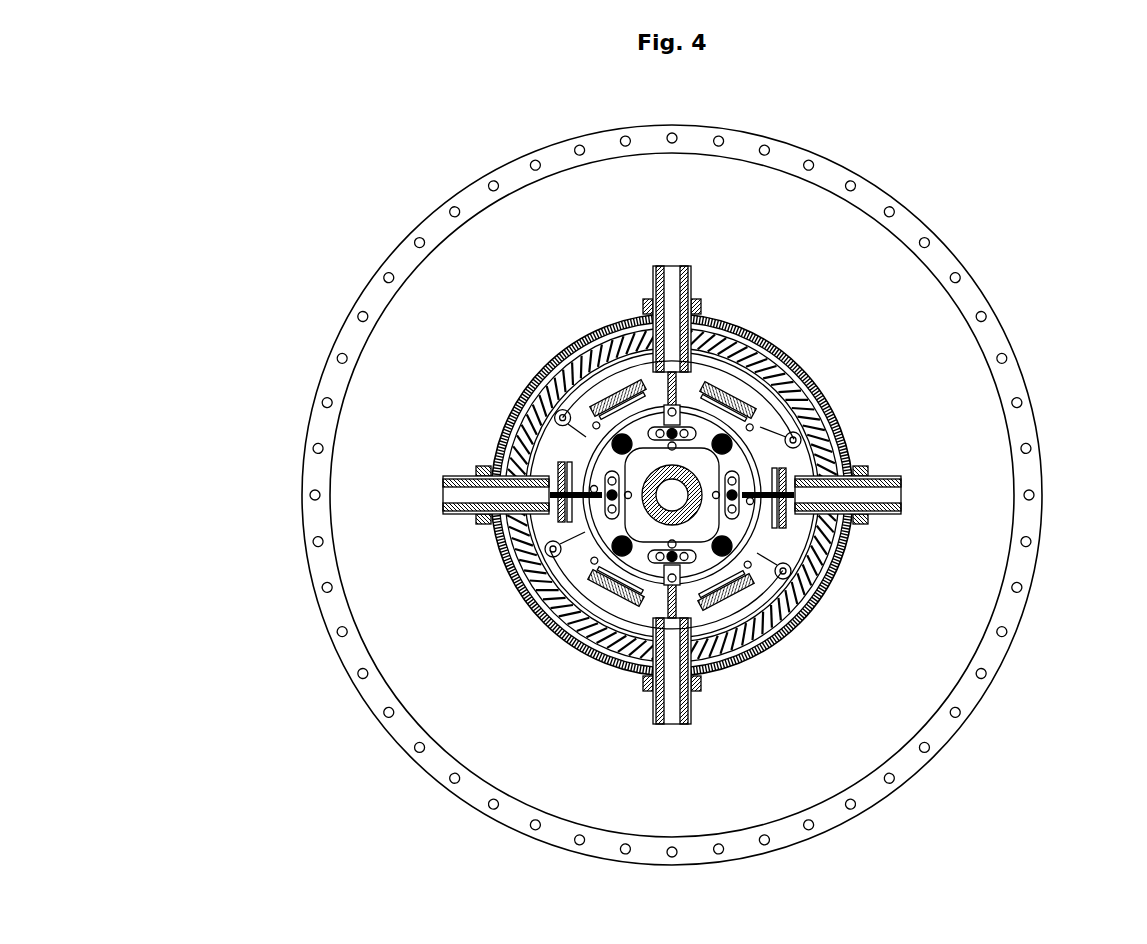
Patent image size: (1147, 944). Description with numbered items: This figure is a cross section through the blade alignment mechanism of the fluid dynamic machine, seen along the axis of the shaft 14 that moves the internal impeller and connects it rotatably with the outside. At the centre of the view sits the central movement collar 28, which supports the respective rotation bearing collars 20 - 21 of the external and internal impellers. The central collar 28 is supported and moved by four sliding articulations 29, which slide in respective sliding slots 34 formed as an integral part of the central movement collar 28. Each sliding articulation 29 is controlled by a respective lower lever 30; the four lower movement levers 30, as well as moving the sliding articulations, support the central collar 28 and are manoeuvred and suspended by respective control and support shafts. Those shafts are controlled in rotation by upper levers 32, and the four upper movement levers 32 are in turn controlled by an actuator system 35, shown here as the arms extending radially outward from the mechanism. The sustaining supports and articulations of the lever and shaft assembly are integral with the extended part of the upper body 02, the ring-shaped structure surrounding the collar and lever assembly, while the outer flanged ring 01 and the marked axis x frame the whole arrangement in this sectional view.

The housing flange 01 is at (937, 737).
The upper body 02 is at (842, 565).
The shaft 14 is at (604, 330).
The rings 20 - 21 is at (624, 608).
The central movement collar 28 is at (545, 613).
The sliding articulations 29 is at (600, 521).
The lower levers 30 is at (790, 373).
The upper levers 32 is at (524, 375).
The sliding slots 34 is at (838, 445).
The actuator system 35 is at (455, 482).
The arm axis x is at (650, 262).